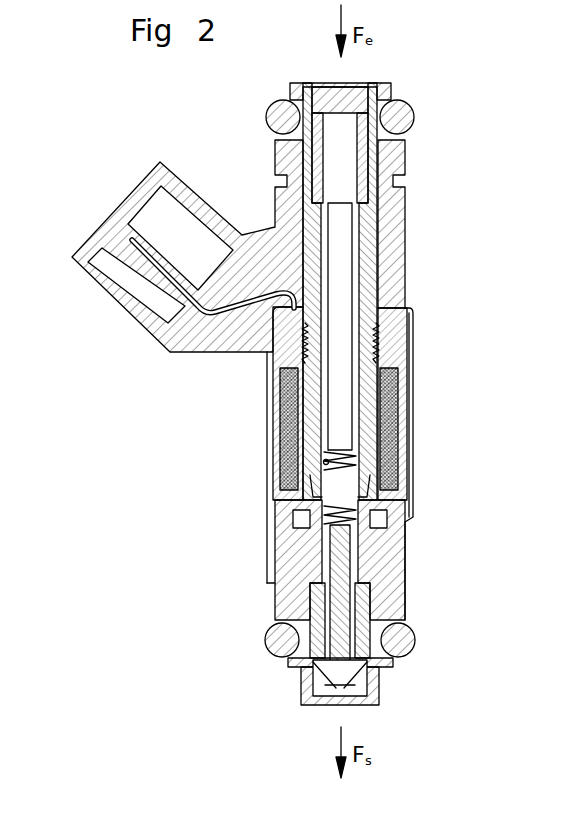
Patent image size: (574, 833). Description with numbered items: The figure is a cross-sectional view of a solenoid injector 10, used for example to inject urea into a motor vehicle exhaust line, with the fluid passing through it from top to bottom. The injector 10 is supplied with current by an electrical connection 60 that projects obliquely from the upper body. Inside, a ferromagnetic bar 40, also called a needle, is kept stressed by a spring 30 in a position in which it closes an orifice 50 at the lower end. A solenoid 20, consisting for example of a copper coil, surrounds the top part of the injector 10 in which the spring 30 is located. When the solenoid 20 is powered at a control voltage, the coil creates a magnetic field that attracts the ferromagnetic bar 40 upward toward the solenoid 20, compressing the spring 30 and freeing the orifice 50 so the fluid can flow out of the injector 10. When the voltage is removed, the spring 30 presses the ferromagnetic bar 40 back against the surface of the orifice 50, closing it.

The solenoid injector 10 is at (248, 390).
The solenoid 20 is at (388, 393).
The spring 30 is at (348, 498).
The ferromagnetic bar 40 is at (340, 588).
The orifice 50 is at (368, 703).
The electrical connection 60 is at (113, 235).